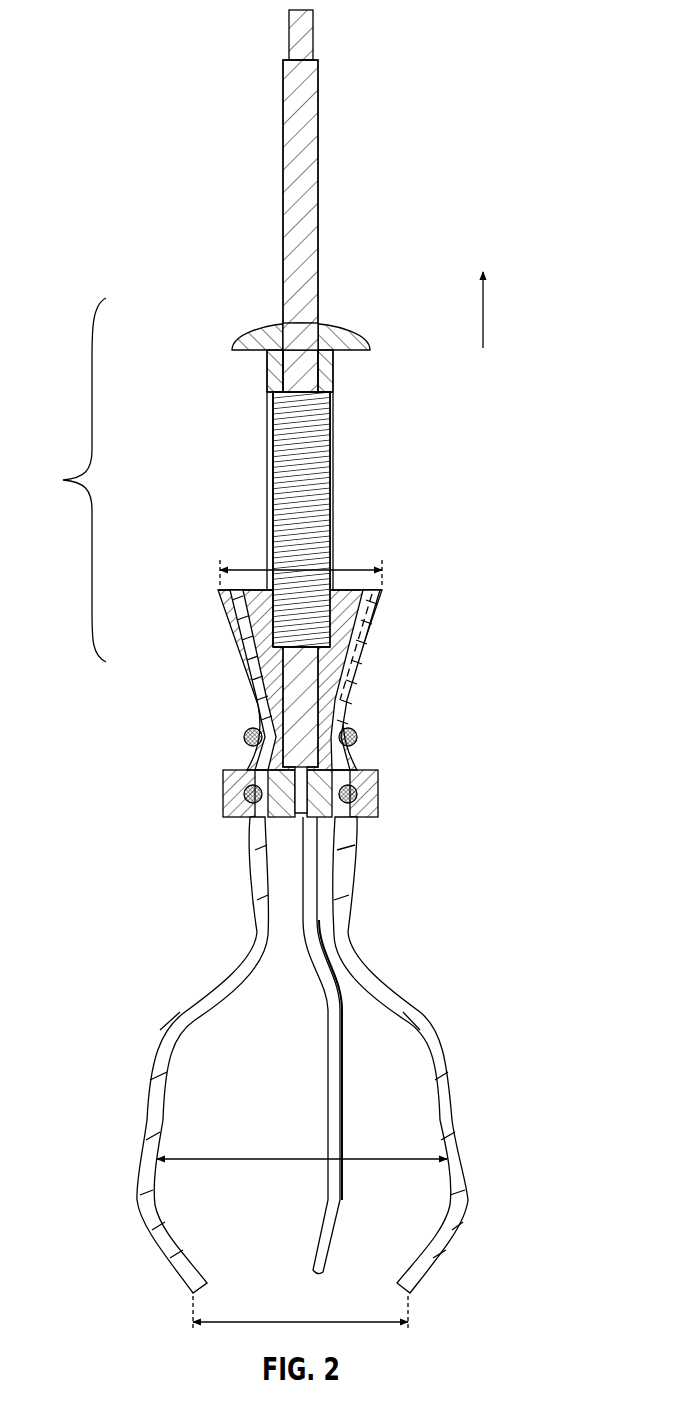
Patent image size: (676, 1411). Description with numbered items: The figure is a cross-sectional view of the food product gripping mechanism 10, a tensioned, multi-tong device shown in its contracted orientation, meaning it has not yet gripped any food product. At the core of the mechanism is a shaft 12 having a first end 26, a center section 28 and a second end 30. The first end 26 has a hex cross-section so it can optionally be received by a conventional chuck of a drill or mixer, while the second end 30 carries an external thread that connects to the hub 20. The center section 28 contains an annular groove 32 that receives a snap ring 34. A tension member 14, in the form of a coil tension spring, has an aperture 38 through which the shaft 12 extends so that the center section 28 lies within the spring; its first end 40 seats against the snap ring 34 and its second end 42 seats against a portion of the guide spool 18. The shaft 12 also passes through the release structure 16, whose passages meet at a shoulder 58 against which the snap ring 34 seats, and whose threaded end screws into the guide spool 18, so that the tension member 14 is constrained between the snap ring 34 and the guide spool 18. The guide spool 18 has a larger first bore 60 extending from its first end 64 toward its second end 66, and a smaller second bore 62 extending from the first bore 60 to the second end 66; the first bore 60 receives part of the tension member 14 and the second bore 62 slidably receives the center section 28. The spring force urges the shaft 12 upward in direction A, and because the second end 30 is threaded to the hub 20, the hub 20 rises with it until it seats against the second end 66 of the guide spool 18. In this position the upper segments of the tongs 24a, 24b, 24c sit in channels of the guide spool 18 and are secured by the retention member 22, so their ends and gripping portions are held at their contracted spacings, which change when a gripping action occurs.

The mechanism 10 is at (449, 36).
The shaft 12 is at (283, 210).
The tension member 14 is at (323, 452).
The release structure 16 is at (333, 367).
The guide spool 18 is at (233, 612).
The hub 20 is at (367, 817).
The retention member 22 is at (360, 738).
The tong 24a is at (457, 1128).
The tong 24b is at (143, 1130).
The tong 24c is at (327, 1118).
The first end 26 is at (315, 33).
The center section 28 is at (68, 480).
The second end 30 is at (290, 797).
The annular groove 32 is at (268, 360).
The snap ring 34 is at (330, 393).
The aperture 38 is at (330, 528).
The first end 40 is at (273, 420).
The second end 42 is at (366, 655).
The shoulder 58 is at (345, 335).
The first bore 60 is at (372, 620).
The second bore 62 is at (280, 665).
The first end 64 is at (230, 590).
The second end 66 is at (338, 785).